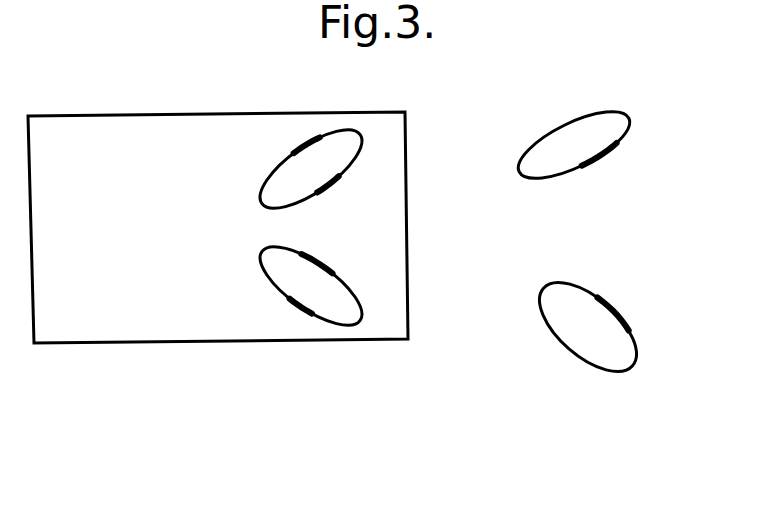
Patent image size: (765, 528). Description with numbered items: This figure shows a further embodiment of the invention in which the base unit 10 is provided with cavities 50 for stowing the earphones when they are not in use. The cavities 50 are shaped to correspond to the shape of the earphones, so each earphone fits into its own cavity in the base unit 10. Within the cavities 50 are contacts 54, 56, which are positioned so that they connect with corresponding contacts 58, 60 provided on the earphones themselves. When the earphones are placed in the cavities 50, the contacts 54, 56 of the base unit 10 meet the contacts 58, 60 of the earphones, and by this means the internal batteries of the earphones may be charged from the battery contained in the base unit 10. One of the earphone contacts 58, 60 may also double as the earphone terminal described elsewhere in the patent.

The base unit 10 is at (105, 103).
The cavities 50 is at (262, 204).
The contact 54 is at (302, 140).
The contact 56 is at (336, 186).
The contact 58 is at (588, 169).
The contact 60 is at (572, 117).